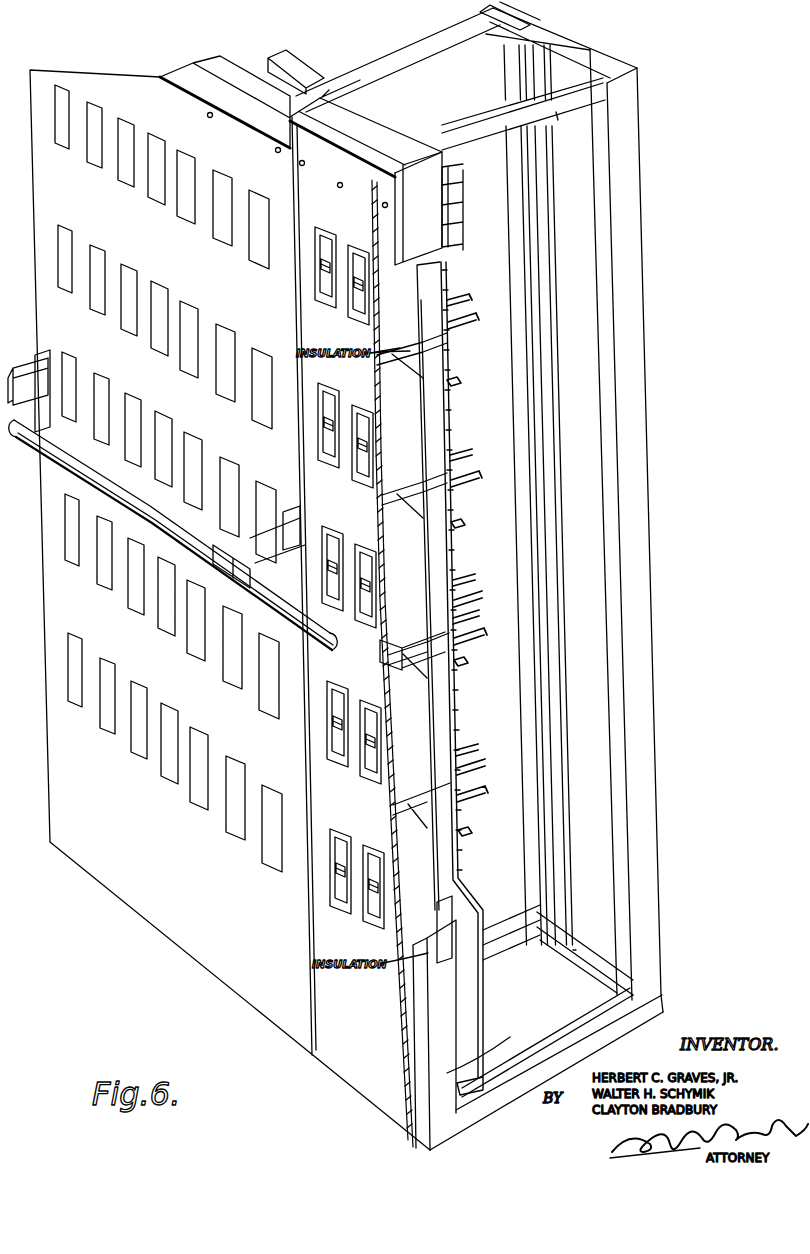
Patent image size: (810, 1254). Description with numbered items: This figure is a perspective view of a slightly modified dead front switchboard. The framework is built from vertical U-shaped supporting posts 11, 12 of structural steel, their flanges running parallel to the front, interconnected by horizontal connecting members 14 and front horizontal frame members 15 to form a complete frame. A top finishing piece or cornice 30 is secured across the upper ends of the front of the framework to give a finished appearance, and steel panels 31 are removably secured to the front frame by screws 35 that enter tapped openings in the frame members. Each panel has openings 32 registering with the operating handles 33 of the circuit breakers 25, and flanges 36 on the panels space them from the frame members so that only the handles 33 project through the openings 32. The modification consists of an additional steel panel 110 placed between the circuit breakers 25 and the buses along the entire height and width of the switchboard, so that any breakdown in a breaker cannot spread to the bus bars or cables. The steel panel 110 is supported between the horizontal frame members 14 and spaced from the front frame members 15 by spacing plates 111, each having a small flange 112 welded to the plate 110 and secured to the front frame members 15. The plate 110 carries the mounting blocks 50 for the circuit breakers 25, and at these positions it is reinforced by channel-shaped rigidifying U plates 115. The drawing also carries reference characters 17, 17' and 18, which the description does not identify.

The vertical U-shaped supporting post 11 is at (624, 120).
The vertical U-shaped supporting post 12 is at (322, 97).
The horizontal connecting member 14 is at (393, 65).
The horizontal connecting member 15 is at (578, 48).
The bus bar 17 is at (470, 678).
The top bus bar plate 17' is at (498, 48).
The rear panel 18 is at (584, 339).
The circuit breaker 25 is at (411, 440).
The top finishing piece or cornice 30 is at (183, 75).
The steel panel 31 is at (164, 398).
The opening 32 is at (358, 760).
The operating handle 33 is at (358, 298).
The screw 35 is at (276, 151).
The flange 36 is at (402, 230).
The mounting block 50 is at (449, 332).
The steel panel 110 is at (429, 279).
The spacing plate 111 is at (461, 612).
The small flange 112 is at (457, 631).
The rigidifying U plate 115 is at (451, 386).